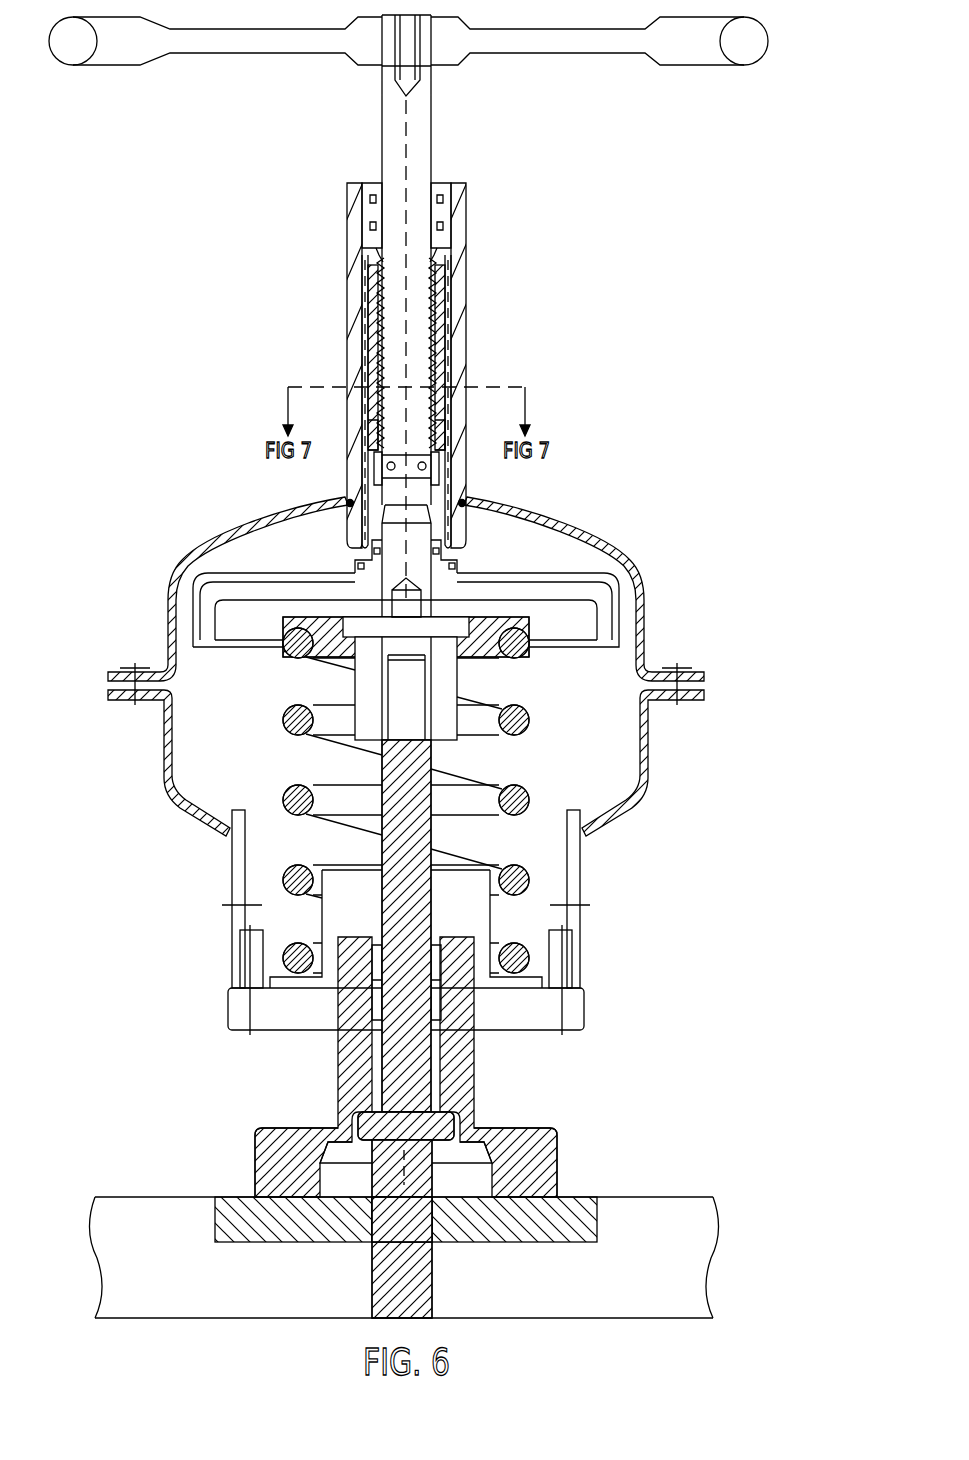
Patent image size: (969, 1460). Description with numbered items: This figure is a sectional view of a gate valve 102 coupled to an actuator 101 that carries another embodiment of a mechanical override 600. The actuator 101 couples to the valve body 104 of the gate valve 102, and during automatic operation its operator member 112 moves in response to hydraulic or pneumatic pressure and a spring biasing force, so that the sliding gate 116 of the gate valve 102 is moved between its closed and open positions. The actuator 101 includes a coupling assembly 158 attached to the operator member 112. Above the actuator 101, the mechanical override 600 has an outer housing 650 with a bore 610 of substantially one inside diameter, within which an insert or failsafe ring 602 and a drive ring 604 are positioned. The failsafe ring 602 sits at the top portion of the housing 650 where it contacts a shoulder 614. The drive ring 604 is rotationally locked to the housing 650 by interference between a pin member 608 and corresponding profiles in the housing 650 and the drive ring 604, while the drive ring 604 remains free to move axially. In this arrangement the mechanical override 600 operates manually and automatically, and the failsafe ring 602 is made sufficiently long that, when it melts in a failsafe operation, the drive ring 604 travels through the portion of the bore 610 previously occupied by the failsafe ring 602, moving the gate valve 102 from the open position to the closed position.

The mechanical override 600 is at (580, 244).
The outer housing 650 is at (458, 242).
The shoulder 614 is at (447, 283).
The failsafe ring 602 is at (363, 296).
The bore 610 is at (450, 343).
The drive ring 604 is at (365, 372).
The pin member 608 is at (347, 503).
The coupling assembly 158 is at (467, 503).
The actuator 101 is at (680, 542).
The operator member 112 is at (608, 607).
The valve body 104 is at (513, 1150).
The gate valve 102 is at (580, 1125).
The sliding gate 116 is at (413, 1172).